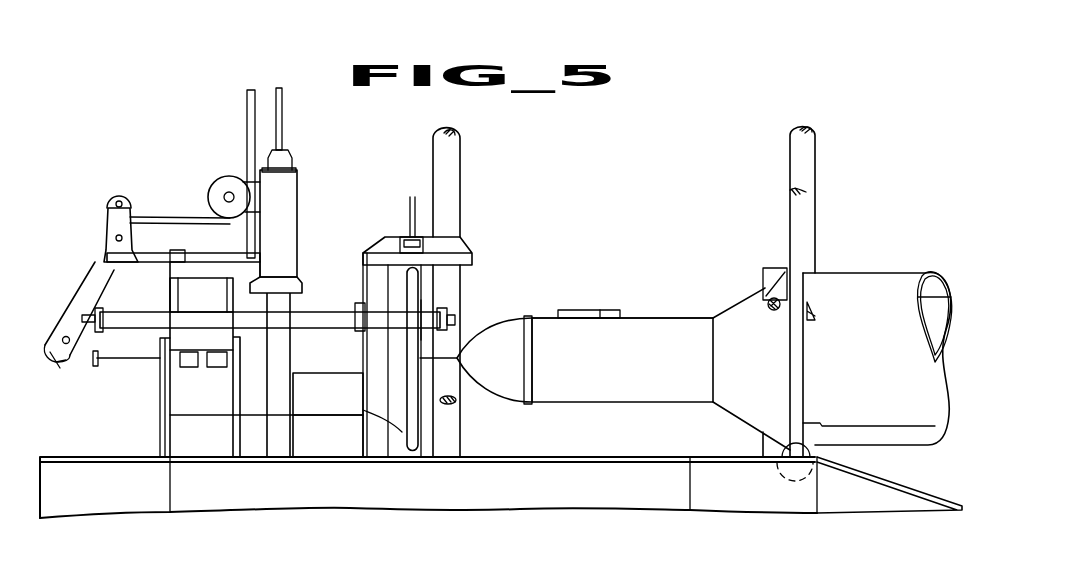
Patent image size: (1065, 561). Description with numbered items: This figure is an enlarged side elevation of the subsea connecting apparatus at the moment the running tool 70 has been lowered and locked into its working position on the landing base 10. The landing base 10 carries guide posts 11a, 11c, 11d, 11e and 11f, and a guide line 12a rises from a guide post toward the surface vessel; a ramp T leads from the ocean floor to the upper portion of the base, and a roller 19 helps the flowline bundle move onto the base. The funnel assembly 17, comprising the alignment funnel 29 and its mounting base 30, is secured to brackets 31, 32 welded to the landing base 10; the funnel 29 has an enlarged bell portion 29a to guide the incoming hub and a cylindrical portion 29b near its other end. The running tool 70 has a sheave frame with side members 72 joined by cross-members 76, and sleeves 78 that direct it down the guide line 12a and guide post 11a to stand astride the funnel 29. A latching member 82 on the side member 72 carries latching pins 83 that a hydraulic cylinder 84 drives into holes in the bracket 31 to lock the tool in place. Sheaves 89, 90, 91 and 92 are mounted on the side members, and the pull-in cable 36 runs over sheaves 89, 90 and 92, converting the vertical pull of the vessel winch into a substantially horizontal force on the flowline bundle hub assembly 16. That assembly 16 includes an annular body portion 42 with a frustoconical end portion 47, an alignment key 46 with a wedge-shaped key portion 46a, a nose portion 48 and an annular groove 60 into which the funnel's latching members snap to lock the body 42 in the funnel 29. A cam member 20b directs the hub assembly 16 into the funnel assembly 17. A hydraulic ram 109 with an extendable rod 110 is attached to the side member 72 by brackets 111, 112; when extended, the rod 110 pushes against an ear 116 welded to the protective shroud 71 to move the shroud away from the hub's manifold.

The landing base 10 is at (574, 499).
The ramp T is at (905, 482).
The roller 19 is at (775, 470).
The guide post 11e is at (815, 165).
The guide post 11f is at (808, 213).
The protective shroud 71 is at (874, 374).
The ears 116 is at (812, 306).
The cam member 20b is at (770, 272).
The frustoconical end portion 47 is at (726, 312).
The annular groove 60 is at (535, 358).
The nose portion 48 is at (510, 405).
The wedge-shaped key portion 46a is at (560, 310).
The alignment key 46 is at (612, 310).
The flowline bundle hub assembly 16 is at (669, 305).
The annular body portion 42 is at (628, 398).
The guide post 11d is at (452, 150).
The guide post 11c is at (450, 437).
The running tool 70 is at (480, 232).
The enlarged bell portion 29a is at (400, 434).
The cylindrical portion 29b is at (330, 332).
The bracket 111 is at (100, 314).
The bracket 112 is at (380, 288).
The extendable rod 110 is at (452, 312).
The hydraulic ram 109 is at (426, 308).
The mounting base 30 is at (338, 409).
The bracket 32 is at (355, 436).
The sleeve 78 is at (290, 180).
The guide post 11a is at (283, 155).
The guide line 12a is at (282, 112).
The side member 72 is at (318, 266).
The pull-in cable 36 is at (247, 122).
The sheave 90 is at (135, 240).
The cross-member 76 is at (186, 253).
The sheave 92 is at (218, 182).
The sheave 91 is at (113, 194).
The sheave 89 is at (60, 358).
The latching member 82 is at (158, 277).
The latching pin 83 is at (160, 363).
The alignment funnel 29 is at (148, 405).
The funnel assembly 17 is at (148, 421).
The hydraulic cylinder 84 is at (214, 367).
The bracket 31 is at (228, 420).